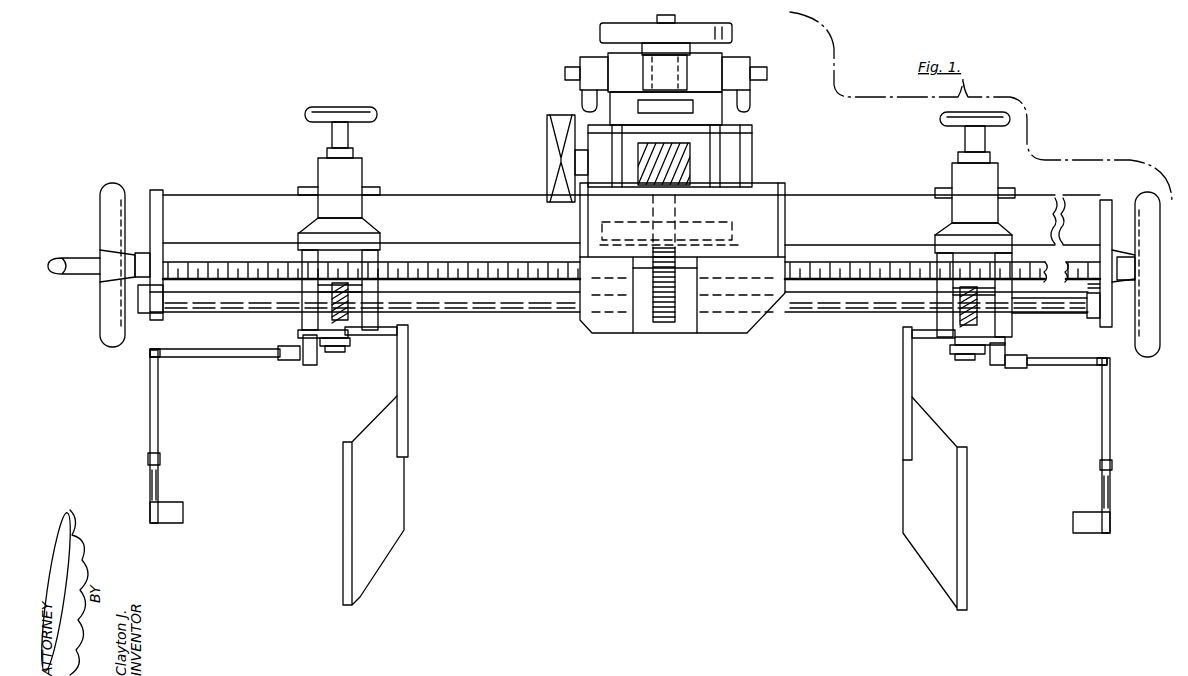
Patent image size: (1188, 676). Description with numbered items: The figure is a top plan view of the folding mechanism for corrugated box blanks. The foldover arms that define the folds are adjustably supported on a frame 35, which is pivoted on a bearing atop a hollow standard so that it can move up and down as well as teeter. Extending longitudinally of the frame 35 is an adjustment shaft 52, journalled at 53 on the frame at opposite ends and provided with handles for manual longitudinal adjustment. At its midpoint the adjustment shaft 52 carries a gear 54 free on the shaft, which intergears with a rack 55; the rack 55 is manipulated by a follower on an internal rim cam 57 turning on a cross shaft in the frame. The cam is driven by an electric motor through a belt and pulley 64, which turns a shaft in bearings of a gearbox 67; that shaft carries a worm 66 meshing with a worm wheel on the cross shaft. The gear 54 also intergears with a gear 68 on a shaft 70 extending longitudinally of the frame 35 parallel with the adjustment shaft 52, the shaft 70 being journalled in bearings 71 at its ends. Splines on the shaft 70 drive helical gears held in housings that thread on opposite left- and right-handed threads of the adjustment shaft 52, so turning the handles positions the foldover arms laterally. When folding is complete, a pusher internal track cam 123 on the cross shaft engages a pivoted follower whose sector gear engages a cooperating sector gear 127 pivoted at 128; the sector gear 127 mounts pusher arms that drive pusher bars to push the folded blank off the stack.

The frame 35 is at (838, 198).
The adjustment shaft 52 is at (832, 262).
The journal 53 is at (1095, 285).
The gear 54 is at (693, 269).
The rack 55 is at (735, 245).
The internal rim cam 57 is at (705, 225).
The pulley 64 is at (548, 173).
The worm 66 is at (690, 160).
The gearbox 67 is at (740, 135).
The gear 68 is at (676, 312).
The shaft 70 is at (800, 315).
The bearings 71 is at (1093, 320).
The pusher internal track cam 123 is at (612, 33).
The sector gear 127 is at (690, 50).
The pivot 128 is at (770, 73).